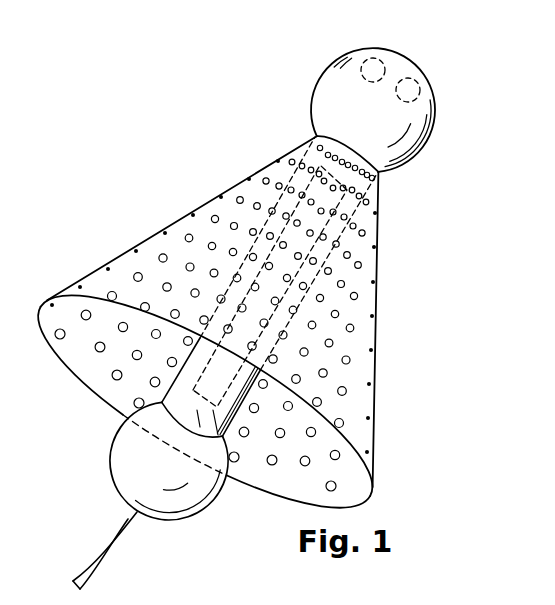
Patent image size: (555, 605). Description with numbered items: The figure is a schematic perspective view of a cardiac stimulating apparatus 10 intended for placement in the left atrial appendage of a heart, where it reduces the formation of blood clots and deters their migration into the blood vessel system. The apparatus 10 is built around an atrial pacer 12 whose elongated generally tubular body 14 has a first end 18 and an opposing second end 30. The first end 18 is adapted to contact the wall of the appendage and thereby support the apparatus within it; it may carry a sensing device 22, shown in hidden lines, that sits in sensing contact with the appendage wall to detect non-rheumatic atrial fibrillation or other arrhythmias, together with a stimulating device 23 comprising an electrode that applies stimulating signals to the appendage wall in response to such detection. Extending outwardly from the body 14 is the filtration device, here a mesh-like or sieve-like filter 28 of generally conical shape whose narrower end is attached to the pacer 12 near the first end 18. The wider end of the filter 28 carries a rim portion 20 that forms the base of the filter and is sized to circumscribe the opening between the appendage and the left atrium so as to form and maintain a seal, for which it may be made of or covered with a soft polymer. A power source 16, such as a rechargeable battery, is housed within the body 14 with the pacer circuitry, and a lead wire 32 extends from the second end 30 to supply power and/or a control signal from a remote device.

The cardiac stimulating apparatus 10 is at (460, 102).
The atrial pacer 12 is at (402, 165).
The elongated generally tubular body 14 is at (237, 420).
The power source 16 is at (197, 382).
The first end 18 is at (328, 82).
The rim portion 20 is at (97, 298).
The sensing device 22 is at (372, 52).
The stimulating device 23 is at (422, 80).
The filter 28 is at (374, 400).
The second end 30 is at (110, 474).
The lead wire 32 is at (90, 567).